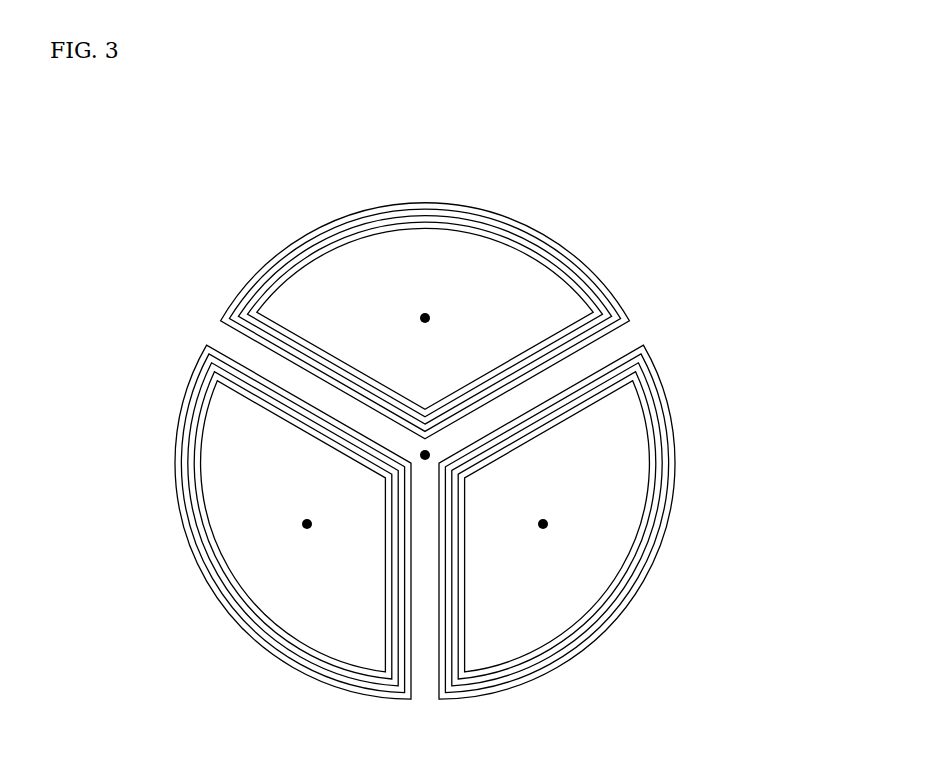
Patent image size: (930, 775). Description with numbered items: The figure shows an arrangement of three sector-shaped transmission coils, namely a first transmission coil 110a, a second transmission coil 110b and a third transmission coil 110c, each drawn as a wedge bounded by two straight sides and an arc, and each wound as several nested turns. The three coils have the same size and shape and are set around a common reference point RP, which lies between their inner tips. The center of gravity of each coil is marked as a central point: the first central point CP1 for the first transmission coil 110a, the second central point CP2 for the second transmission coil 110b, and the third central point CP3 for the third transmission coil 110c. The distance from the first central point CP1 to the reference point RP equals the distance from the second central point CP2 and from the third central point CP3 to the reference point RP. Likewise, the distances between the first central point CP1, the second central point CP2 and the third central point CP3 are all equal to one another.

The first transmission coil 110a is at (455, 208).
The second transmission coil 110b is at (205, 577).
The third transmission coil 110c is at (648, 577).
The first central point CP1 is at (425, 312).
The second central point CP2 is at (302, 524).
The third central point CP3 is at (548, 524).
The reference point RP is at (431, 455).